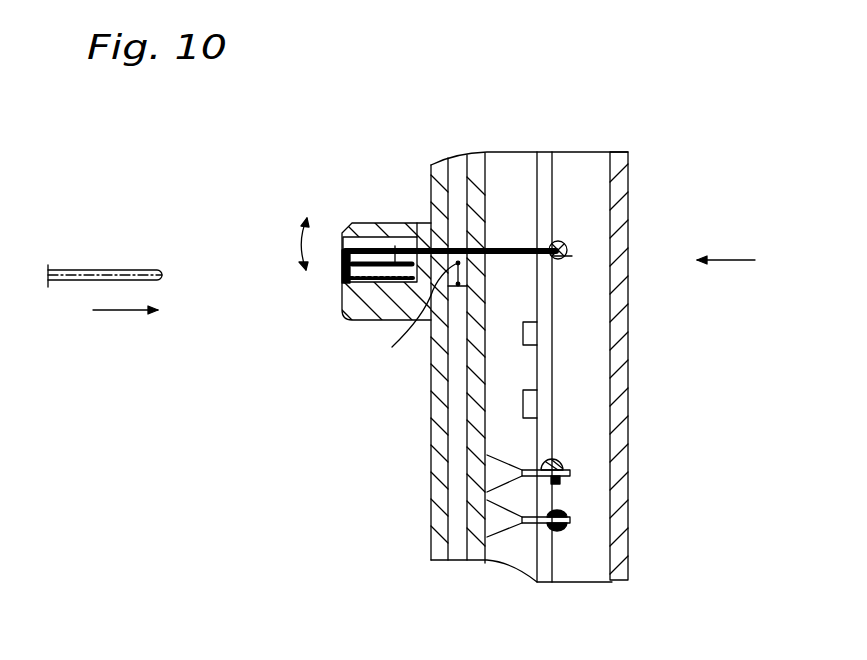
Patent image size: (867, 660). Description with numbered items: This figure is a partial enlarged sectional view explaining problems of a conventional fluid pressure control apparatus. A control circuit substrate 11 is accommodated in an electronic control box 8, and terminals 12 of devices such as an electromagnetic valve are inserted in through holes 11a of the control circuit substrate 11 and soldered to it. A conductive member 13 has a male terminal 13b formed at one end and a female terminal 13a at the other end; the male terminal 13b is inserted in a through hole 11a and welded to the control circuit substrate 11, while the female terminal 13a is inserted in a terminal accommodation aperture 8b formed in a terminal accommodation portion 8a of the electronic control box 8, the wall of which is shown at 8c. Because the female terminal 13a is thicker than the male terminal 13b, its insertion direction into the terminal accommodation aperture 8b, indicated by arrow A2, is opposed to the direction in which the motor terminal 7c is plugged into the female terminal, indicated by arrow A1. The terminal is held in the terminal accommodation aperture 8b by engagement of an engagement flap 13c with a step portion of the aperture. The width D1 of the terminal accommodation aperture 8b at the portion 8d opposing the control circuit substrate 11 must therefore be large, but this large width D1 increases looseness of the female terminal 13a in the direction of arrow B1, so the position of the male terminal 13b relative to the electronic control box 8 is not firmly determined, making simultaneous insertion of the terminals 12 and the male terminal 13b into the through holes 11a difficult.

The projection of lever 7c is at (137, 268).
The electronic control box 8 is at (440, 522).
The terminal accommodation portion 8a is at (343, 225).
The terminal accommodation aperture 8b is at (341, 278).
The wall portion of connecting member 8c is at (418, 243).
The portion opposing to the control circuit substrate 8d is at (460, 268).
The control circuit substrate 11 is at (552, 172).
The through hole 11a is at (552, 270).
The terminal 12 is at (570, 474).
The conductive member 13 is at (503, 258).
The female terminal 13a is at (382, 243).
The male terminal 13b is at (567, 252).
The engagement flap 13c is at (395, 243).
The arrow A1 is at (117, 315).
The arrow A2 is at (730, 262).
The arrow B1 is at (297, 240).
The width D1 is at (408, 318).